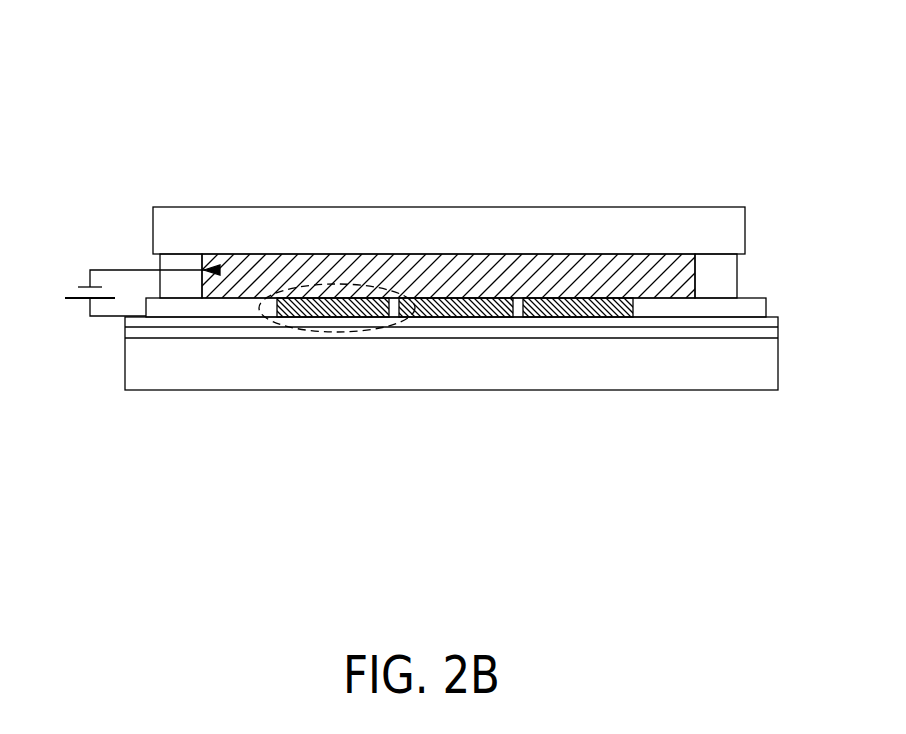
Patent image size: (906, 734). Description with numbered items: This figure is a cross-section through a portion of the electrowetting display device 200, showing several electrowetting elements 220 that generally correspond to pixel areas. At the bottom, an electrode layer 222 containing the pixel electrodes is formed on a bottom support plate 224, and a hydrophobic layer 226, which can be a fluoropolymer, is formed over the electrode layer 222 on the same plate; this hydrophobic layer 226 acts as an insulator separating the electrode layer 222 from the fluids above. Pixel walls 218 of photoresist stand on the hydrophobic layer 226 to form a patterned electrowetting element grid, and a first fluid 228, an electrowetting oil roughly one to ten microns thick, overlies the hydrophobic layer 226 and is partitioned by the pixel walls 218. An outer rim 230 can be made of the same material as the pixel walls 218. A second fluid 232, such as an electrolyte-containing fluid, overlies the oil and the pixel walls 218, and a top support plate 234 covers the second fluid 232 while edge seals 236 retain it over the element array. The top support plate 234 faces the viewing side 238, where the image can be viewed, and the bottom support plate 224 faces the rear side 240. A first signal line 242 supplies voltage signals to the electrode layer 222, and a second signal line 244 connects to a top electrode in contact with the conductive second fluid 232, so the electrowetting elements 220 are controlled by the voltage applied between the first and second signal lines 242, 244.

The electrowetting display device 200 is at (420, 252).
The viewing side 238 is at (475, 211).
The rear side 240 is at (420, 372).
The top support plate 234 is at (208, 241).
The edge seals 236 is at (738, 275).
The second fluid 232 is at (505, 254).
The hydrophobic layer 226 is at (140, 318).
The first fluid 228 is at (563, 317).
The pixel walls 218 is at (517, 317).
The electrowetting elements 220 is at (337, 332).
The bottom support plate 224 is at (182, 374).
The outer rim 230 is at (712, 318).
The electrode layer 222 is at (125, 333).
The second signal line 244 is at (142, 270).
The first signal line 242 is at (90, 316).